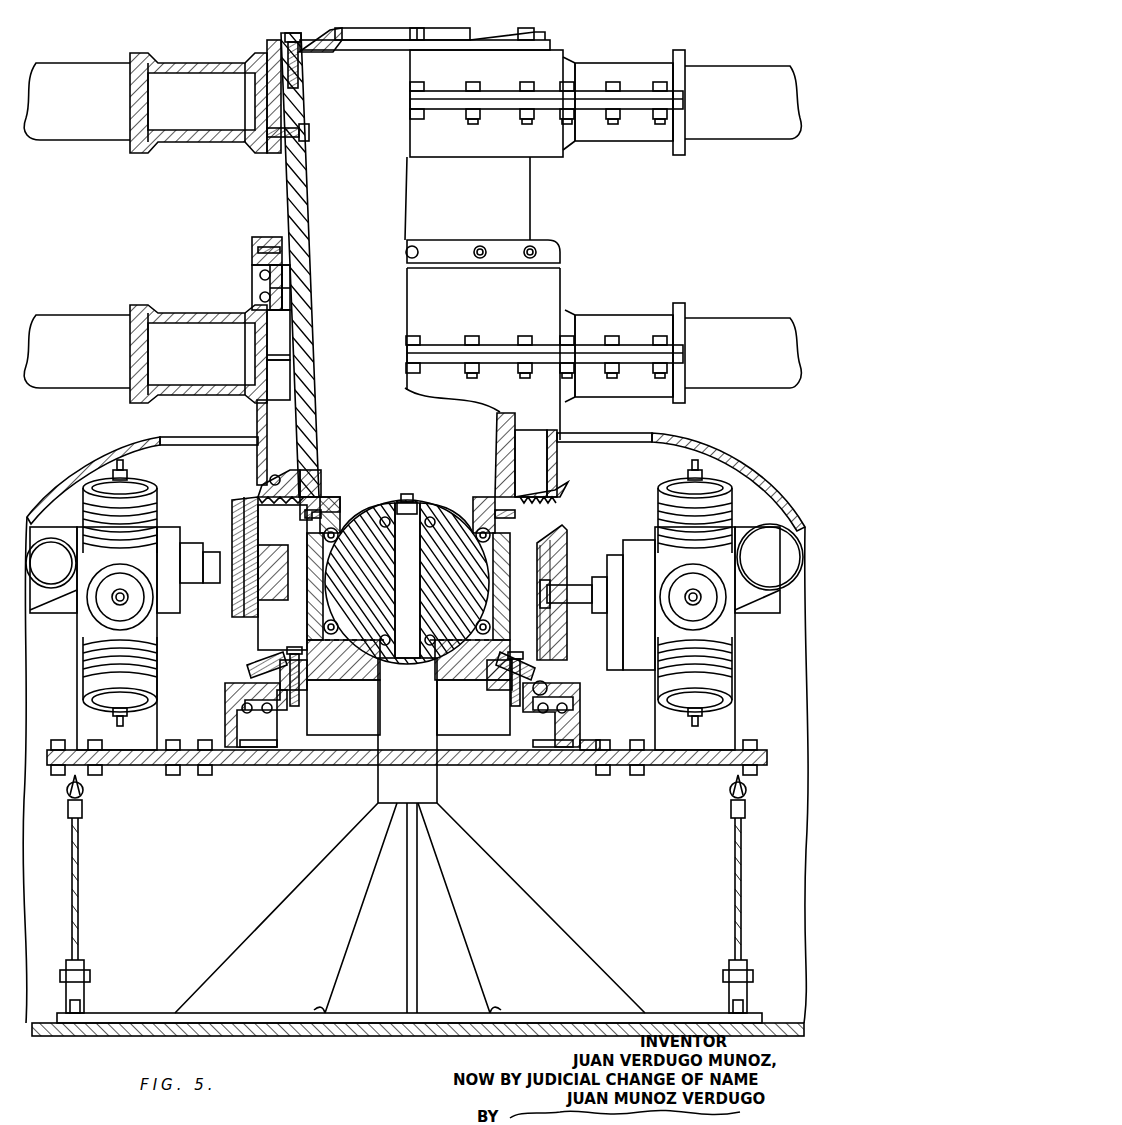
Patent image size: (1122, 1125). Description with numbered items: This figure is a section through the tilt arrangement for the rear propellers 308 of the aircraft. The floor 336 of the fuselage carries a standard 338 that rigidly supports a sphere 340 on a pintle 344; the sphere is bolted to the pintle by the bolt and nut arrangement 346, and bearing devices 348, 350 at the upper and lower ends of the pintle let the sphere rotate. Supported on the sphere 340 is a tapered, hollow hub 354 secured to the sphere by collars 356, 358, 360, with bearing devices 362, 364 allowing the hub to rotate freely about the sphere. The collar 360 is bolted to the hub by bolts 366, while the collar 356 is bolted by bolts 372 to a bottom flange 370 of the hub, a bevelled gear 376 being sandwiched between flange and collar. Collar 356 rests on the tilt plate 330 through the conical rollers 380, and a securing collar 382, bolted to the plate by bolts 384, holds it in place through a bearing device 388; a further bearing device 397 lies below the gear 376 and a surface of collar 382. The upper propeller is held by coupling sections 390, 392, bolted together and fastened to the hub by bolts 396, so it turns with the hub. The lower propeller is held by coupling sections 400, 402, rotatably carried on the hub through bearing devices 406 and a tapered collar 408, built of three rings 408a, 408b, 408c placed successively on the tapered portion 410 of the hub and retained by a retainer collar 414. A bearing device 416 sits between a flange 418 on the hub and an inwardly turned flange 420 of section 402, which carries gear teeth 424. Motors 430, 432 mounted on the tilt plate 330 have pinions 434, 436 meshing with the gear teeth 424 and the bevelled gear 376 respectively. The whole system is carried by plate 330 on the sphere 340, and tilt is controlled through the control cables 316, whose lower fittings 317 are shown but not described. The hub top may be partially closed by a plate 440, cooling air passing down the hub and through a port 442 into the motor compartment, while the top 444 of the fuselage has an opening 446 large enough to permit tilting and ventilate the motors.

The rear propellers 308 is at (92, 305).
The control cables 316 is at (734, 881).
The cable anchor 317 is at (736, 952).
The tilt plate 330 is at (258, 772).
The floor of the fuselage 336 is at (366, 1040).
The standard 338 is at (515, 878).
The sphere 340 is at (366, 516).
The pintle 344 is at (418, 550).
The bolt and nut arrangement 346 is at (413, 500).
The bearing device 348 is at (372, 730).
The bearing device 350 is at (403, 500).
The tapered hollow hub 354 is at (308, 596).
The collar 356 is at (503, 708).
The collar 358 is at (308, 562).
The collar 360 is at (355, 478).
The bearing device 362 is at (318, 537).
The bearing device 364 is at (322, 642).
The bolts 366 is at (508, 498).
The bottom flange of the hub 370 is at (318, 652).
The bolts 372 is at (294, 660).
The bevelled gear 376 is at (256, 662).
The conical rollers 380 is at (528, 748).
The securing collar 382 is at (617, 747).
The bolts 384 is at (603, 748).
The bearing device 388 is at (570, 700).
The coupling section 390 is at (630, 72).
The coupling section 392 is at (636, 130).
The bolts 396 is at (307, 135).
The bearing device 397 is at (240, 680).
The coupling section 400 is at (630, 326).
The coupling section 402 is at (640, 383).
The bearing devices 406 is at (262, 297).
The tapered collar 408 is at (285, 273).
The ring 408a is at (288, 262).
The ring 408b is at (288, 290).
The ring 408c is at (292, 300).
The tapered portion of the hub 410 is at (280, 335).
The retainer collar 414 is at (274, 240).
The bearing device 416 is at (262, 478).
The flange on the hub 418 is at (284, 472).
The inwardly turned flange 420 is at (268, 492).
The gear teeth 424 is at (562, 498).
The motor 430 is at (148, 742).
The motor 432 is at (708, 742).
The pinion 434 is at (232, 527).
The pinion 436 is at (566, 567).
The plate 440 is at (338, 42).
The port 442 is at (318, 492).
The top of the fuselage 444 is at (102, 462).
The opening 446 is at (182, 440).